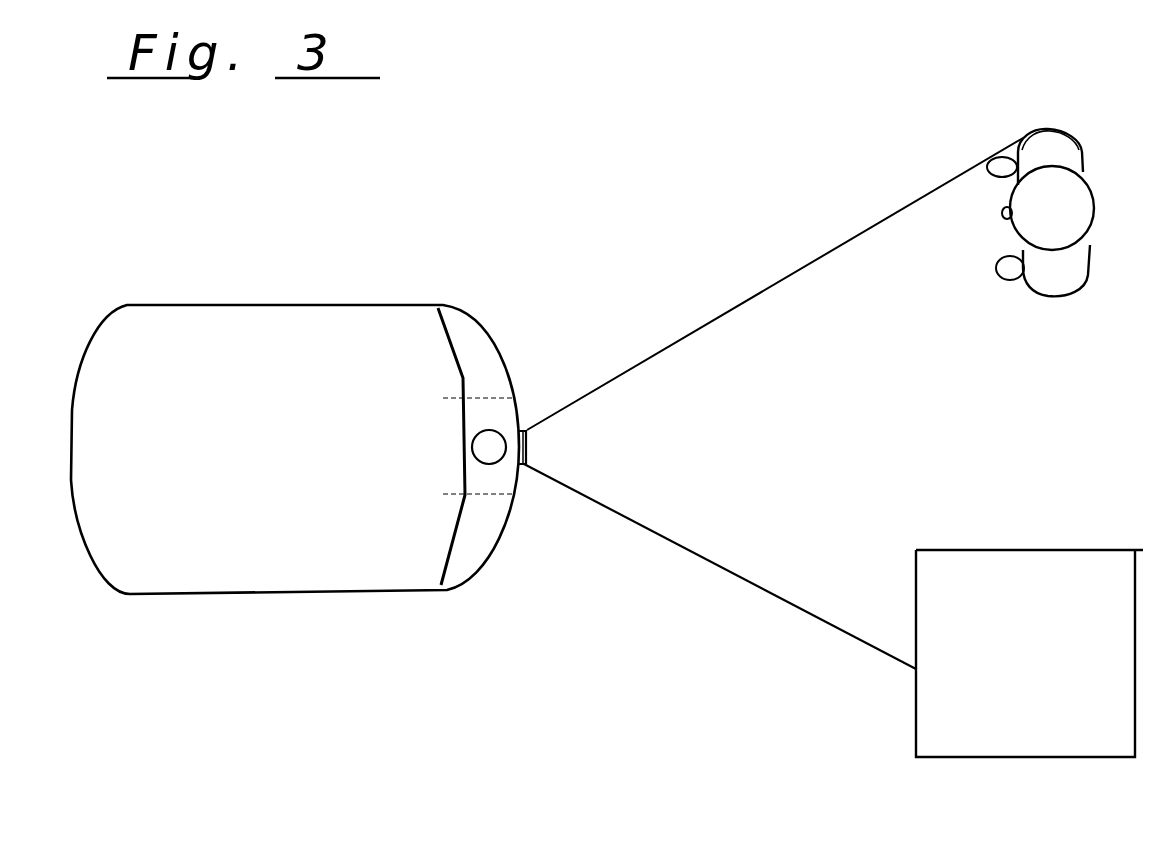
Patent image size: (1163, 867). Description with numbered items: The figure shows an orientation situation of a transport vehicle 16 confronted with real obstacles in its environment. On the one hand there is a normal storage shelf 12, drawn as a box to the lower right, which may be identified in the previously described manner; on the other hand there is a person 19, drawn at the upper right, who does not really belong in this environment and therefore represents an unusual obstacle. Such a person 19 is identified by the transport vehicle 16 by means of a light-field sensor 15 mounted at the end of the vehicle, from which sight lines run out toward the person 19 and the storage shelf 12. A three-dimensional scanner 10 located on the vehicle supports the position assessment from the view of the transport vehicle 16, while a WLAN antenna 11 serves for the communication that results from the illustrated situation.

The 3-D scanner 10 is at (490, 463).
The WLAN antenna 11 is at (456, 364).
The storage shelf 12 is at (1058, 550).
The light-field sensor 15 is at (527, 448).
The transport vehicle 16 is at (274, 305).
The person 19 is at (1043, 290).